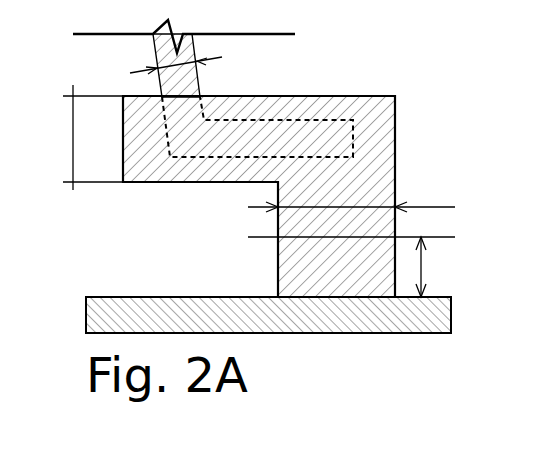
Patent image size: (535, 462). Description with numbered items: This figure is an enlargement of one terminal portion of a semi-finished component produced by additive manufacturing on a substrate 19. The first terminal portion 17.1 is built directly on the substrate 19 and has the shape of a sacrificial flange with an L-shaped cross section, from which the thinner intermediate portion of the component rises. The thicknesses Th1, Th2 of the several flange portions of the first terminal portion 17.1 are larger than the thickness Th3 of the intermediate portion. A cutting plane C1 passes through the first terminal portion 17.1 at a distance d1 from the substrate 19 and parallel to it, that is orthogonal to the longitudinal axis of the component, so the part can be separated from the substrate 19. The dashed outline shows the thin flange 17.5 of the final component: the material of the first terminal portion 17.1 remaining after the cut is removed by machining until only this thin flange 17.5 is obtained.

The first terminal portion 17.1 is at (408, 157).
The thin flange 17.5 is at (280, 143).
The substrate 19 is at (107, 316).
The thickness of a flange portion Th1 is at (352, 210).
The thickness of a flange portion Th2 is at (76, 137).
The thickness of the intermediate portion Th3 is at (195, 62).
The distance from the substrate d1 is at (435, 267).
The cutting plane C1 is at (265, 237).